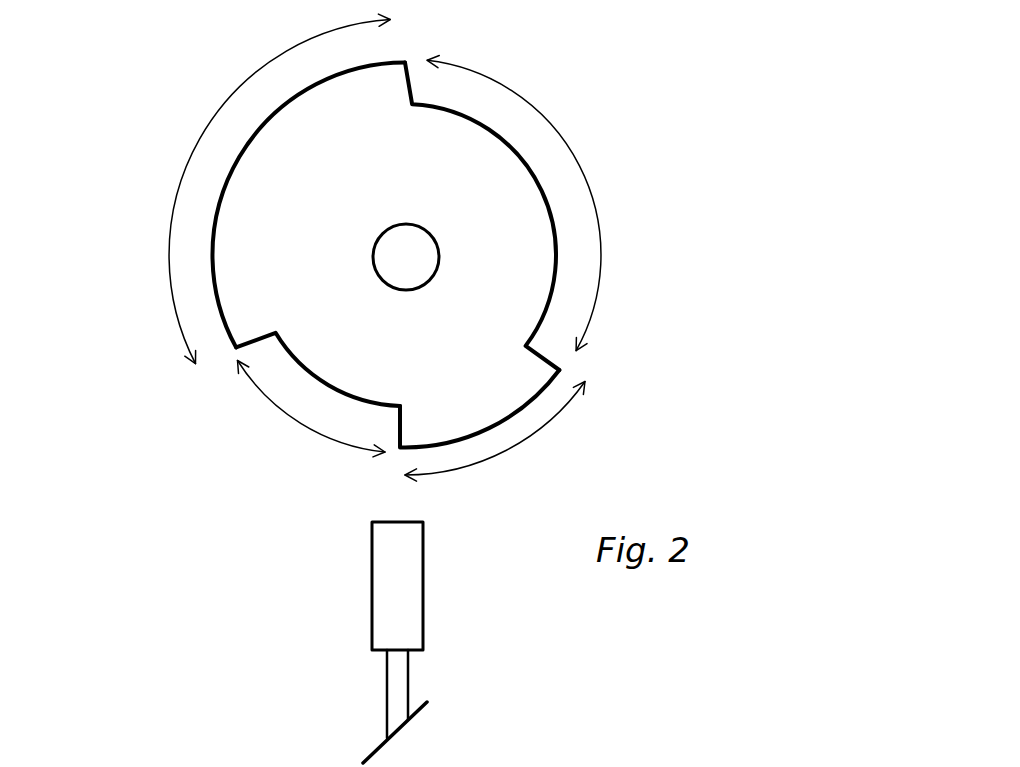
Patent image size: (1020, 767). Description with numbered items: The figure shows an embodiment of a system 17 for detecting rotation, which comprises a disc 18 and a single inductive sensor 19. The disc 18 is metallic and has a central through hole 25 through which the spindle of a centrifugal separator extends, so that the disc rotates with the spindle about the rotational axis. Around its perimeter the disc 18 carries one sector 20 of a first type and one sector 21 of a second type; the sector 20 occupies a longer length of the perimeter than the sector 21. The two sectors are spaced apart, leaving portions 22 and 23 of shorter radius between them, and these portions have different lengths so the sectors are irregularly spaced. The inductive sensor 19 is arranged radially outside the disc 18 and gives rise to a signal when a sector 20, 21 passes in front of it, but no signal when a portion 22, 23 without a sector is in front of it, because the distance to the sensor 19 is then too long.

The system for detecting rotation 17 is at (125, 158).
The disc 18 is at (518, 217).
The inductive sensor 19 is at (408, 582).
The sector of a first type 20 is at (212, 253).
The sector of a second type 21 is at (517, 415).
The portion between the sectors 22 is at (353, 400).
The portion between the sectors 23 is at (517, 147).
The through hole 25 is at (422, 264).